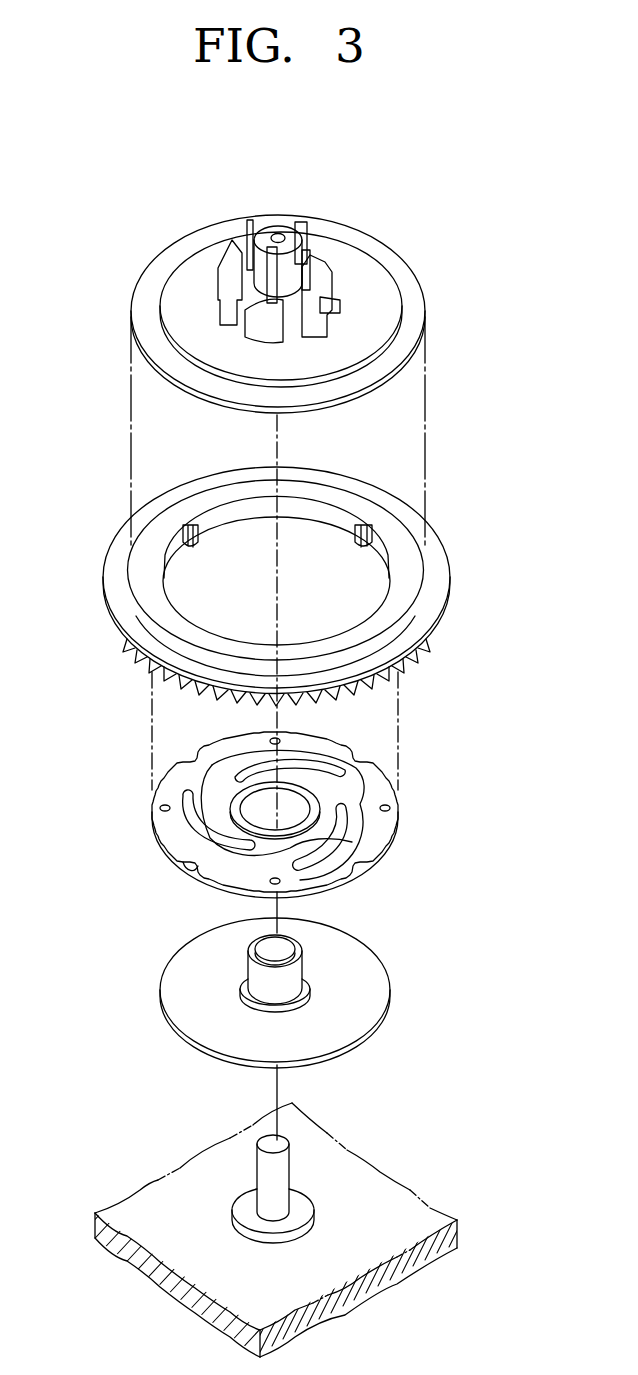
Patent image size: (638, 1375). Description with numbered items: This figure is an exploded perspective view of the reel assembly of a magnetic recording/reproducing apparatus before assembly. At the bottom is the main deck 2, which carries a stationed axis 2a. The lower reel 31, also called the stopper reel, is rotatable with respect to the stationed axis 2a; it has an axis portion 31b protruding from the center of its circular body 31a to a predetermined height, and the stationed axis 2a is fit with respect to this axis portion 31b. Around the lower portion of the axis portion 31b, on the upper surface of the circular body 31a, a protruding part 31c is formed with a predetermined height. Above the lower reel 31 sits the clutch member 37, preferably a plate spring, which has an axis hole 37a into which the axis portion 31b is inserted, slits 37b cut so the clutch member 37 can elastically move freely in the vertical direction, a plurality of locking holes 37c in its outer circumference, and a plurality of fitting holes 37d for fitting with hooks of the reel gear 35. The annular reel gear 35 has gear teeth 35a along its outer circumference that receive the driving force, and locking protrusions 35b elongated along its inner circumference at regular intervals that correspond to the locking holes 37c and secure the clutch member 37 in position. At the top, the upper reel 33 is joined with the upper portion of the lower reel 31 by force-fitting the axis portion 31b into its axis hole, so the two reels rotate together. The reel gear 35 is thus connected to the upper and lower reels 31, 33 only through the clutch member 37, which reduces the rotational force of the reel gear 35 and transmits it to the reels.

The main deck 2 is at (306, 1234).
The stationed axis 2a is at (277, 1142).
The lower reel 31 is at (289, 990).
The circular body 31a is at (360, 1003).
The axis portion 31b is at (260, 950).
The protruding part 31c is at (245, 985).
The upper reel 33 is at (419, 220).
The reel gear 35 is at (323, 600).
The gear teeth 35a is at (393, 697).
The locking protrusions 35b is at (196, 540).
The clutch member 37 is at (284, 823).
The axis hole 37a is at (255, 792).
The slits 37b is at (365, 827).
The locking holes 37c is at (185, 865).
The fitting holes 37d is at (283, 878).